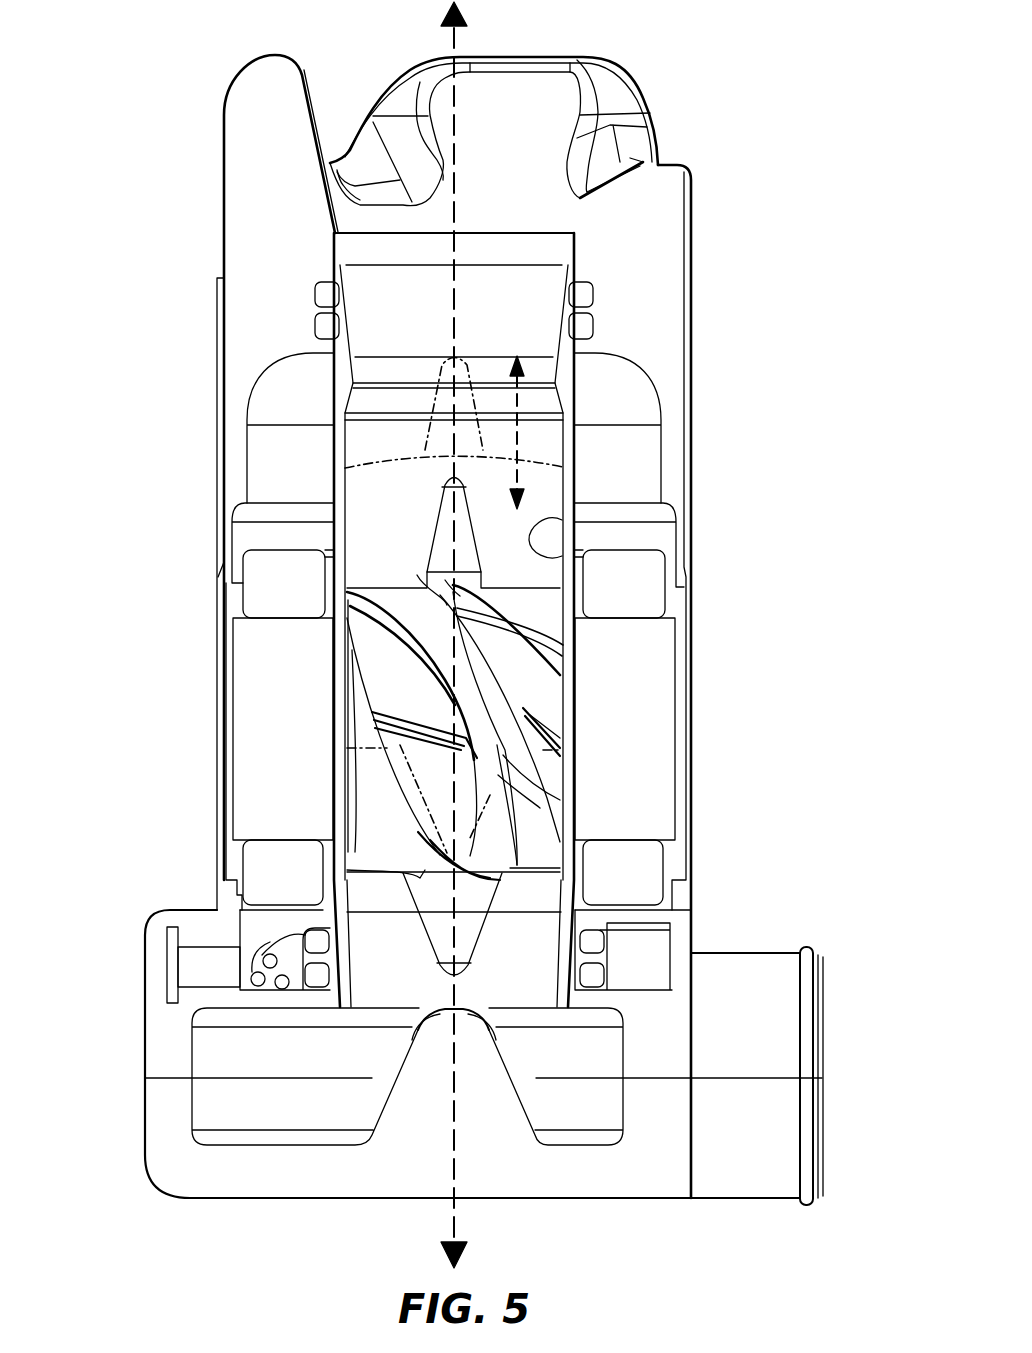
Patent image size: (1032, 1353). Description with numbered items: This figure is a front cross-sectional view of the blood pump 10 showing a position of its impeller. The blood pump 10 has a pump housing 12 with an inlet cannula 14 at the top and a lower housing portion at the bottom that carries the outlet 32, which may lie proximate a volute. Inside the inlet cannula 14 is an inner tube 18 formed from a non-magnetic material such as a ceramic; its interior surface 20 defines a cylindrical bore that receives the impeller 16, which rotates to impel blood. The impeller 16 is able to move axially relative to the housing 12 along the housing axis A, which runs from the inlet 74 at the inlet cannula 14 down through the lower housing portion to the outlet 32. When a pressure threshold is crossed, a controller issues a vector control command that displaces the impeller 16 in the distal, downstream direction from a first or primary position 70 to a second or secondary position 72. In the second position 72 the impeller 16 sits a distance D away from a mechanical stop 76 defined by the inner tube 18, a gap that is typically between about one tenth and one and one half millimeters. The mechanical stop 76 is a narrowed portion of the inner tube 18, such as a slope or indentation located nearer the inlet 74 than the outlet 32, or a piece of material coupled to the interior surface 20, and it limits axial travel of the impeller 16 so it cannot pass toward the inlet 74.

The blood pump 10 is at (158, 312).
The pump housing 12 is at (752, 433).
The inlet cannula 14 is at (693, 603).
The impeller 16 is at (370, 775).
The inner tube 18 is at (337, 437).
The interior surface 20 is at (562, 520).
The outlet 32 is at (827, 1147).
The first position 70 is at (372, 500).
The second position 72 is at (372, 672).
The inlet 74 is at (425, 242).
The mechanical stop 76 is at (547, 370).
The housing axis A is at (456, 26).
The distance D is at (550, 437).